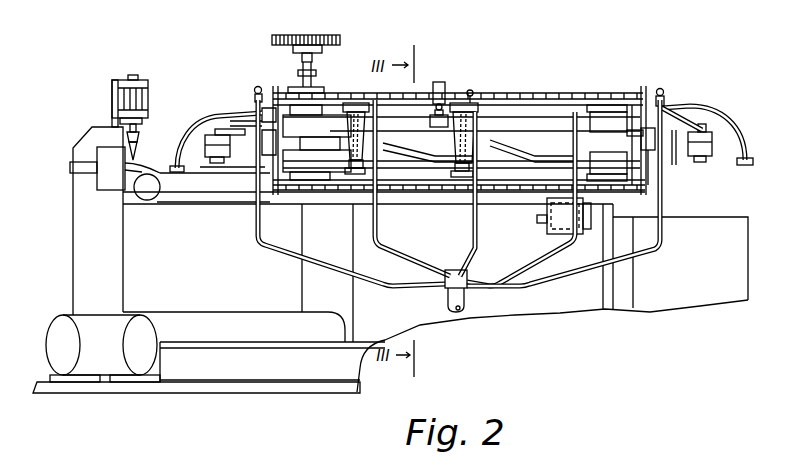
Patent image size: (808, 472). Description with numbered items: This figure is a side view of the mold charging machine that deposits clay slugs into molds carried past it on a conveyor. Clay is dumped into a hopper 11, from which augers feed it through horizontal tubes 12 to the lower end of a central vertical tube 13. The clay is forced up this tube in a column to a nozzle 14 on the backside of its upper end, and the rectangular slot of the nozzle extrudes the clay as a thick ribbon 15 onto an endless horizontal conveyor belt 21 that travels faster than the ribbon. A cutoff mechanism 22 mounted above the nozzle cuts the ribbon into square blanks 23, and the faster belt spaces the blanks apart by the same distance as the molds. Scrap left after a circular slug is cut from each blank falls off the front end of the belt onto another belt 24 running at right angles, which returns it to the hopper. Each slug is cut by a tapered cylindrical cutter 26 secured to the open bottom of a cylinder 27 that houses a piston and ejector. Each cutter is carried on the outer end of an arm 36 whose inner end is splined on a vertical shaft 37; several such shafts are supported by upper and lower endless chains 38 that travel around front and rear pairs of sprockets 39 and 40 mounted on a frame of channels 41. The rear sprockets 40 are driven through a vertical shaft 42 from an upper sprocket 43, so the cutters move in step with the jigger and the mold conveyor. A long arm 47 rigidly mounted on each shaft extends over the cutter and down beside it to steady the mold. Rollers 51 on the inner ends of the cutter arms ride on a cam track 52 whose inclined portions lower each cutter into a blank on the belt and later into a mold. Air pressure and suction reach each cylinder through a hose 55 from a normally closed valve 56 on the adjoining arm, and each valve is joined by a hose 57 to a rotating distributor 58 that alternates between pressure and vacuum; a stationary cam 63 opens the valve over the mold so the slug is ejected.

The hopper 11 is at (515, 310).
The horizontal tubes 12 is at (208, 312).
The central vertical tube 13 is at (122, 262).
The nozzle 14 is at (118, 185).
The ribbon 15 is at (158, 178).
The conveyor belt 21 is at (232, 200).
The cutoff mechanism 22 is at (140, 150).
The blanks 23 is at (246, 176).
The belt 24 is at (590, 213).
The cutter 26 is at (203, 158).
The cylinder 27 is at (368, 140).
The arm 36 is at (673, 168).
The vertical shaft 37 is at (468, 100).
The endless chains 38 is at (520, 93).
The front sprockets 39 is at (612, 95).
The rear sprockets 40 is at (318, 100).
The channels 41 is at (405, 126).
The vertical shaft 42 is at (302, 62).
The upper sprocket 43 is at (272, 40).
The long arm 47 is at (214, 117).
The rollers 51 is at (622, 135).
The cam track 52 is at (355, 188).
The hose 55 is at (700, 115).
The valve 56 is at (254, 92).
The hose 57 is at (348, 270).
The rotating distributor 58 is at (466, 298).
The stationary cam 63 is at (443, 88).